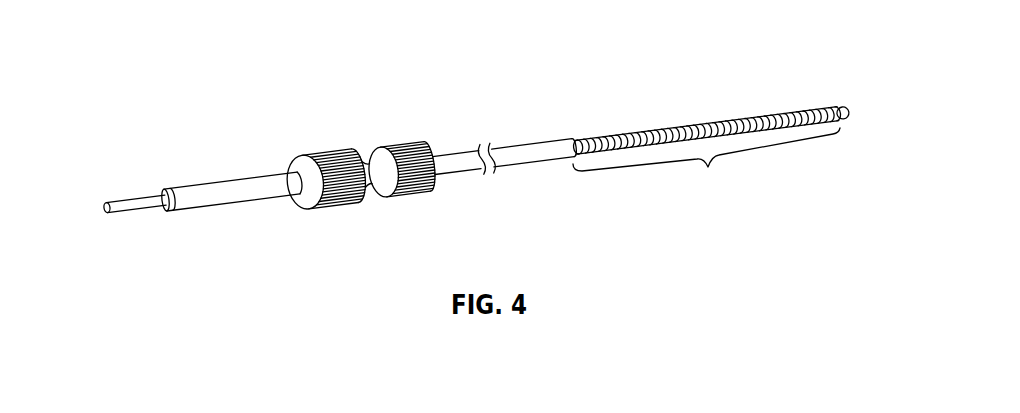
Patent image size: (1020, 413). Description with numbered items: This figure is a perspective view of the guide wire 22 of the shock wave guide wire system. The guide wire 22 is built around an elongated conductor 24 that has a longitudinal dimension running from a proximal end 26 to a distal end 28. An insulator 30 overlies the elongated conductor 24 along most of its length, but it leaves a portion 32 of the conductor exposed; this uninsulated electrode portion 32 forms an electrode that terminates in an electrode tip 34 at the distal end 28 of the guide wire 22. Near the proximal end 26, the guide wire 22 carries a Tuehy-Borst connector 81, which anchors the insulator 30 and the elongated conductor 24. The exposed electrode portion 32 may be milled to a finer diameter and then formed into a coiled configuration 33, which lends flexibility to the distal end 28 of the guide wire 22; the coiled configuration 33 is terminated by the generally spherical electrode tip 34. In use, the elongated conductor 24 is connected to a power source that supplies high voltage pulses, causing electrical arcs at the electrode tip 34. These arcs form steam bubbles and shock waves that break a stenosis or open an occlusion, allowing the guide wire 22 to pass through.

The guide wire 22 is at (396, 109).
The elongated conductor 24 is at (127, 211).
The proximal end 26 is at (165, 165).
The distal end 28 is at (849, 84).
The insulator 30 is at (523, 150).
The exposed portion 32 is at (706, 165).
The coiled configuration 33 is at (685, 127).
The electrode tip 34 is at (841, 106).
The Tuehy-Borst connector 81 is at (330, 153).